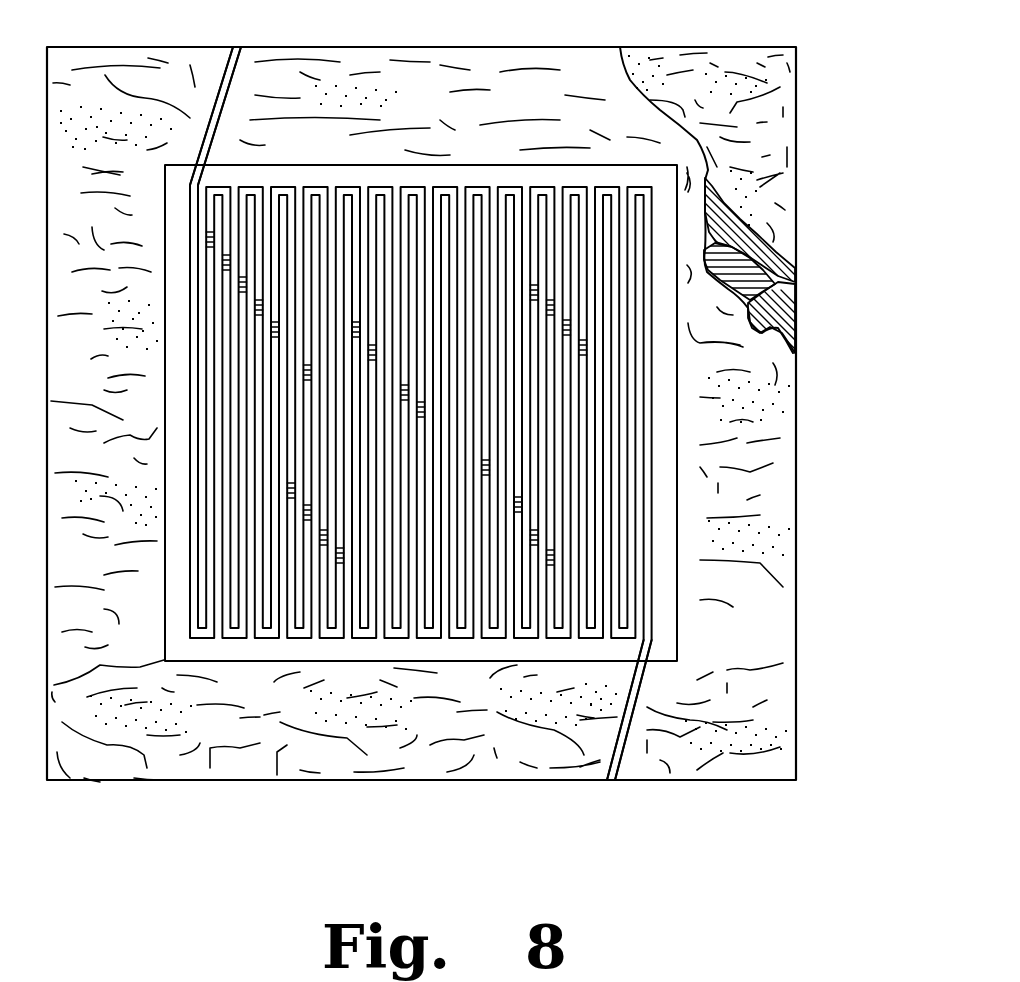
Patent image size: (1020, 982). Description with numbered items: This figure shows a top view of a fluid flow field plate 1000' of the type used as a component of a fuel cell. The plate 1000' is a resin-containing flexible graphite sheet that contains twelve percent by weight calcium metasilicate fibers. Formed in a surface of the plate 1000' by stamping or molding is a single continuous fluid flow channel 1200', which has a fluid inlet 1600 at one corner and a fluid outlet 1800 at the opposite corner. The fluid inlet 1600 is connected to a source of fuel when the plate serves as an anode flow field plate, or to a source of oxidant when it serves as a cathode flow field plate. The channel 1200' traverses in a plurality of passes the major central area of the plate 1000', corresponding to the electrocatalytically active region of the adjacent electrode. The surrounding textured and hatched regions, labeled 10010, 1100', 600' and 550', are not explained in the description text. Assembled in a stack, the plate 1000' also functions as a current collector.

The fluid flow field plate 1000' is at (434, 454).
The substrate 10010 is at (777, 598).
The boundary region 1100' is at (724, 180).
The hatched layer 600' is at (773, 319).
The intermediate layer 550' is at (787, 301).
The continuous fluid flow channel 1200' is at (421, 397).
The fluid inlet 1600 is at (235, 45).
The fluid outlet 1800 is at (608, 780).